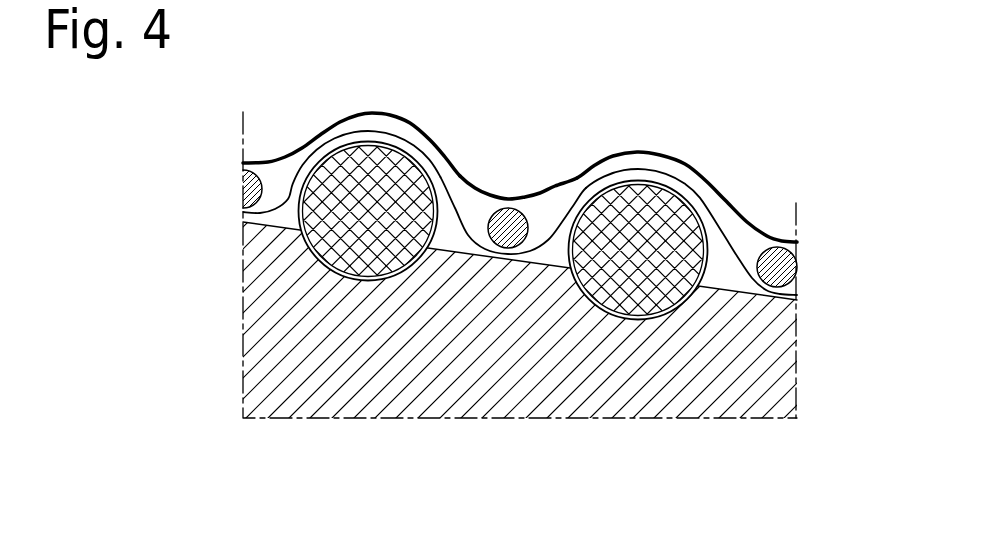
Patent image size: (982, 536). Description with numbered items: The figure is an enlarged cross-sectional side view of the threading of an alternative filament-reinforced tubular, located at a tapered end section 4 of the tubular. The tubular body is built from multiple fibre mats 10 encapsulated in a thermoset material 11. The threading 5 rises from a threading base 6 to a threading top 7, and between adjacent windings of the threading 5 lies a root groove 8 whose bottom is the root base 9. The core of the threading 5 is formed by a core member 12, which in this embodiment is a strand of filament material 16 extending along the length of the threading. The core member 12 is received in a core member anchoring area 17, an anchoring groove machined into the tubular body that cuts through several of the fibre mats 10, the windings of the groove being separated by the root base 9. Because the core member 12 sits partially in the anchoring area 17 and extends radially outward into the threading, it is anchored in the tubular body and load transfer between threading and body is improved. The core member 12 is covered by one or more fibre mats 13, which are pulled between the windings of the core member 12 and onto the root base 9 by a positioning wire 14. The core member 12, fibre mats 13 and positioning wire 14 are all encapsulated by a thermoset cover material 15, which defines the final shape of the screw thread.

The tapered end section 4 is at (516, 292).
The threading 5 is at (524, 263).
The threading base 6 is at (803, 231).
The threading top 7 is at (520, 283).
The root groove 8 is at (505, 185).
The root base 9 is at (495, 267).
The fibre mats 10 is at (768, 358).
The thermoset material 11 is at (327, 370).
The core member 12 is at (356, 181).
The fibre mats 13 is at (524, 157).
The positioning wire 14 is at (522, 213).
The thermoset cover material 15 is at (285, 218).
The strand of filament material 16 is at (356, 221).
The core member anchoring area 17 is at (310, 262).